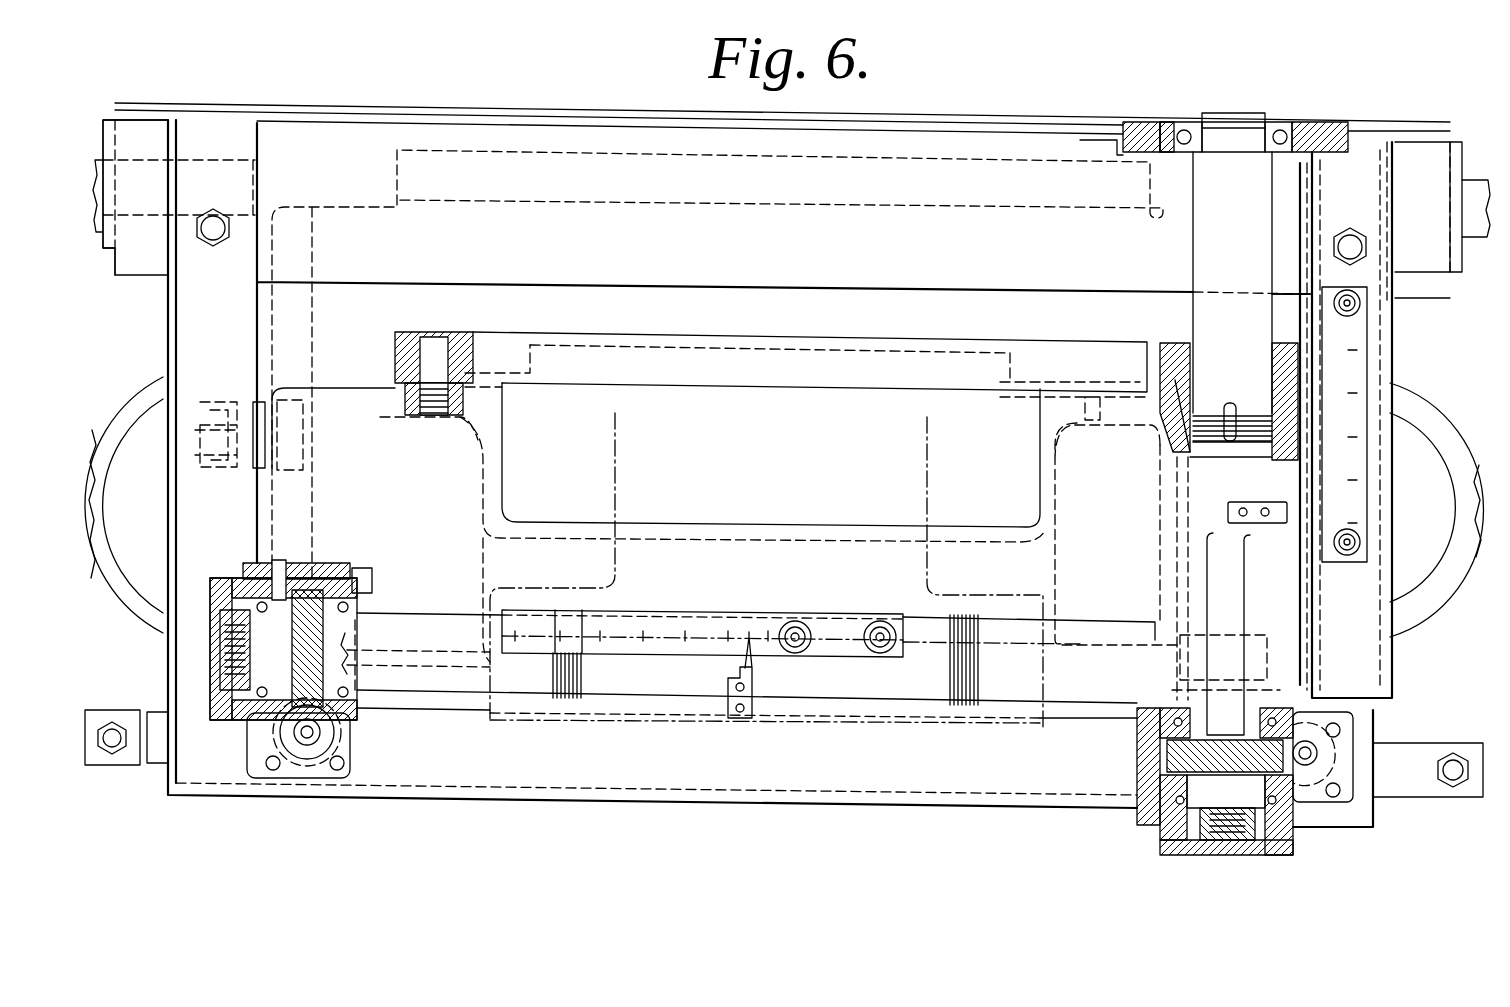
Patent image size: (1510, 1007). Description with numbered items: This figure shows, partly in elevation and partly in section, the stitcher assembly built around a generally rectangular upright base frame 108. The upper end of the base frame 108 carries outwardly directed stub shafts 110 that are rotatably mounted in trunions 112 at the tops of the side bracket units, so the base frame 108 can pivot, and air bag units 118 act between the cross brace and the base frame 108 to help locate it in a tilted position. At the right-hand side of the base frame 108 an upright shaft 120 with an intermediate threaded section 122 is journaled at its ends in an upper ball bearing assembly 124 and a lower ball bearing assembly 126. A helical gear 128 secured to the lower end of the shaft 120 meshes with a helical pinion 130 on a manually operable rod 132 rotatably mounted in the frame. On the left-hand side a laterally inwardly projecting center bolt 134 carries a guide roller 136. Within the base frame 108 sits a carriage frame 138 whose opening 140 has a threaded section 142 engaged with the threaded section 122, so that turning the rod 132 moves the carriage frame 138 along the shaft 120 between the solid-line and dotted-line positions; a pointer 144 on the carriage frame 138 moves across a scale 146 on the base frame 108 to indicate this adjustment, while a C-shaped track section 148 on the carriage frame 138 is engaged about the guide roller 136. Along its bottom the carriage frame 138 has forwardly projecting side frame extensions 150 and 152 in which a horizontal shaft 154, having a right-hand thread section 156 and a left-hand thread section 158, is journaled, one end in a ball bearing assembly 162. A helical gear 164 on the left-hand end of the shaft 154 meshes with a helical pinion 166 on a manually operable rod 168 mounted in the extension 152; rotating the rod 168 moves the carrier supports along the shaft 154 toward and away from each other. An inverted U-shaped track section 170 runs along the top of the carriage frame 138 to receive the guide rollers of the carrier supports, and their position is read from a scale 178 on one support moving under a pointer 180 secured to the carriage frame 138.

The base frame 108 is at (542, 102).
The stub shafts 110 is at (1470, 178).
The trunions 112 is at (138, 122).
The air bag units 118 is at (134, 379).
The upright shaft 120 is at (1196, 243).
The threaded section 122 is at (1216, 415).
The upper ball bearing assembly 124 is at (1180, 126).
The lower ball bearing assembly 126 is at (1140, 822).
The helical gear 128 is at (1145, 752).
The helical pinion 130 is at (1226, 790).
The manually operable rod 132 is at (1310, 755).
The center bolt 134 is at (213, 405).
The guide roller 136 is at (292, 470).
The carriage frame 138 is at (1098, 338).
The opening 140 is at (1192, 372).
The threaded section 142 is at (1196, 400).
The pointer 144 is at (1348, 523).
The scale 146 is at (1355, 378).
The C-shaped track section 148 is at (290, 388).
The side frame extension 150 is at (1220, 660).
The side frame extension 152 is at (352, 570).
The horizontal shaft 154 is at (856, 712).
The right-hand thread section 156 is at (968, 706).
The left-hand thread section 158 is at (572, 700).
The ball bearing assembly 162 is at (248, 580).
The helical gear 164 is at (298, 575).
The helical pinion 166 is at (292, 680).
The manually operable rod 168 is at (312, 742).
The inverted U-shaped track section 170 is at (738, 197).
The scale 178 is at (710, 622).
The pointer 180 is at (753, 677).